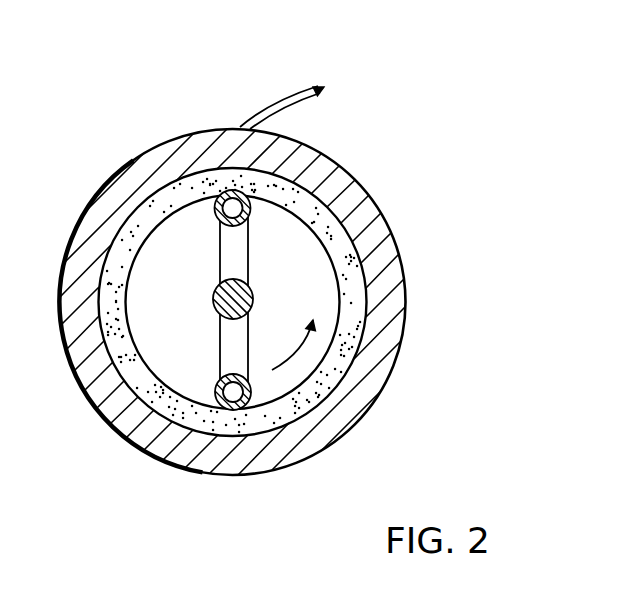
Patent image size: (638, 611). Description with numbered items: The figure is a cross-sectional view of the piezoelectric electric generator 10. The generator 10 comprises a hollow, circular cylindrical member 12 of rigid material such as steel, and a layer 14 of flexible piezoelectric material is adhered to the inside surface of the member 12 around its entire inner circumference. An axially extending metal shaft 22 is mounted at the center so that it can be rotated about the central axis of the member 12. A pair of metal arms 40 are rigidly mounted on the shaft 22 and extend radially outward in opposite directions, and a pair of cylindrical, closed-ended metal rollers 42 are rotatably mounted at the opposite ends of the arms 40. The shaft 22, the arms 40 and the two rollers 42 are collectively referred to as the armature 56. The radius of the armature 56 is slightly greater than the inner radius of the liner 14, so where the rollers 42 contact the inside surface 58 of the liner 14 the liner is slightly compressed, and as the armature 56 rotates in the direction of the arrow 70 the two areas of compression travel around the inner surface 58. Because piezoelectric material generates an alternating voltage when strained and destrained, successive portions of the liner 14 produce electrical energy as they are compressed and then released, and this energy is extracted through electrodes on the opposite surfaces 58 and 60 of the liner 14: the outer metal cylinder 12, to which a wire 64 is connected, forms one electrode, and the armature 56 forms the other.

The piezoelectric electric generator 10 is at (289, 259).
The hollow circular cylindrical member 12 is at (383, 320).
The layer of flexible piezoelectric material 14 is at (370, 190).
The shaft 22 is at (253, 295).
The arms 40 is at (240, 255).
The rollers 42 is at (281, 299).
The armature 56 is at (236, 300).
The inside surface of the liner 58 is at (163, 377).
The outer surface of the liner 60 is at (393, 242).
The wire 64 is at (268, 92).
The arrow 70 is at (300, 343).